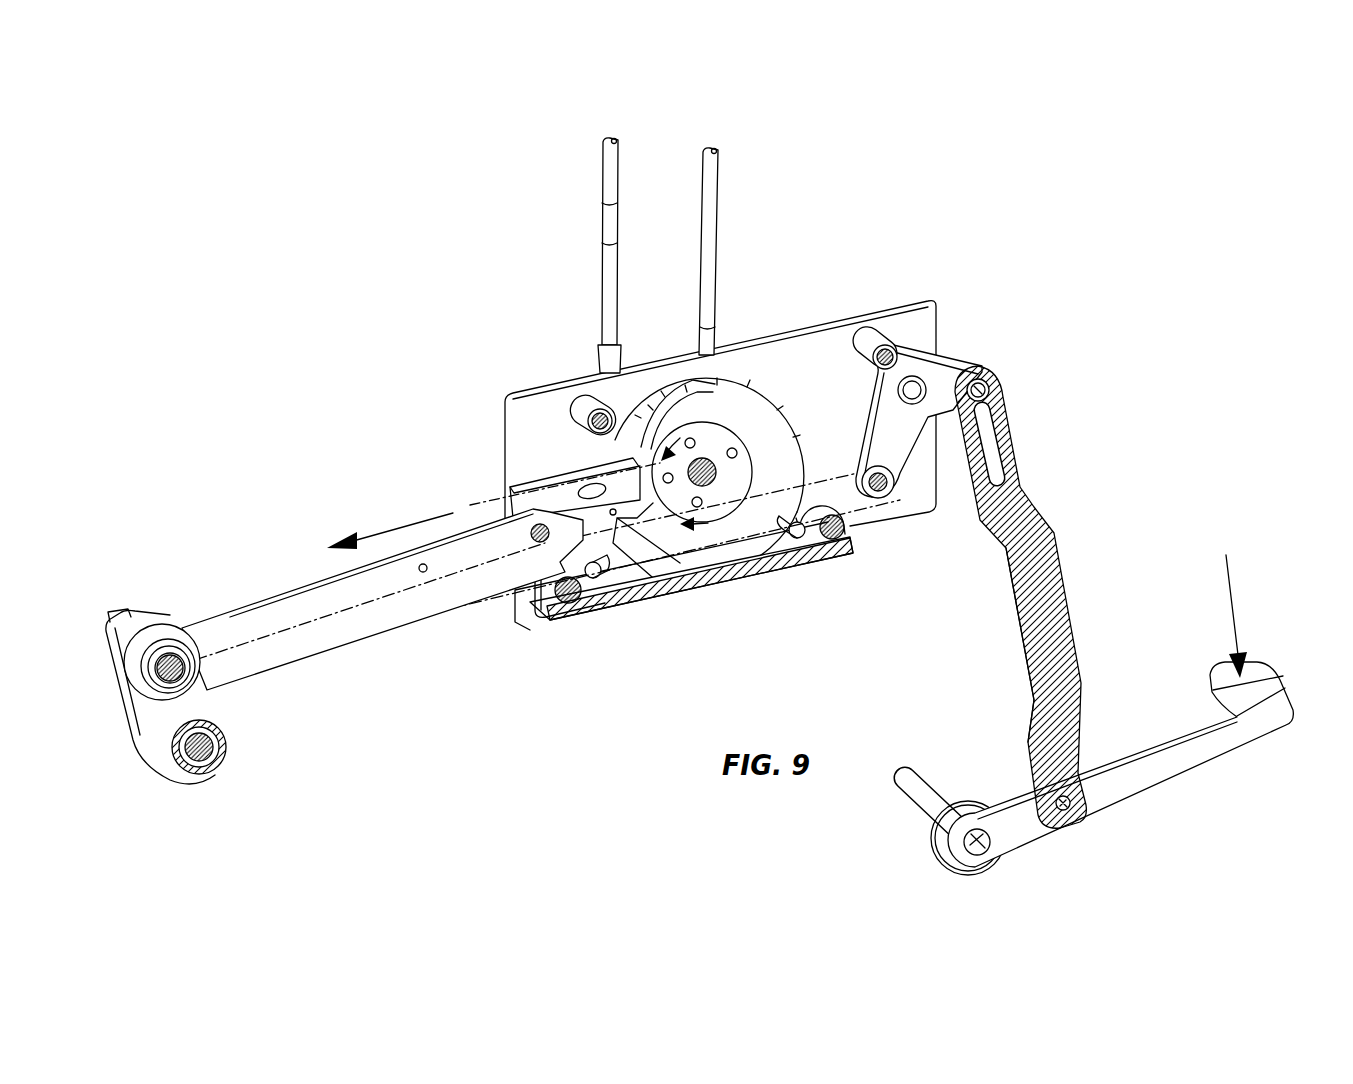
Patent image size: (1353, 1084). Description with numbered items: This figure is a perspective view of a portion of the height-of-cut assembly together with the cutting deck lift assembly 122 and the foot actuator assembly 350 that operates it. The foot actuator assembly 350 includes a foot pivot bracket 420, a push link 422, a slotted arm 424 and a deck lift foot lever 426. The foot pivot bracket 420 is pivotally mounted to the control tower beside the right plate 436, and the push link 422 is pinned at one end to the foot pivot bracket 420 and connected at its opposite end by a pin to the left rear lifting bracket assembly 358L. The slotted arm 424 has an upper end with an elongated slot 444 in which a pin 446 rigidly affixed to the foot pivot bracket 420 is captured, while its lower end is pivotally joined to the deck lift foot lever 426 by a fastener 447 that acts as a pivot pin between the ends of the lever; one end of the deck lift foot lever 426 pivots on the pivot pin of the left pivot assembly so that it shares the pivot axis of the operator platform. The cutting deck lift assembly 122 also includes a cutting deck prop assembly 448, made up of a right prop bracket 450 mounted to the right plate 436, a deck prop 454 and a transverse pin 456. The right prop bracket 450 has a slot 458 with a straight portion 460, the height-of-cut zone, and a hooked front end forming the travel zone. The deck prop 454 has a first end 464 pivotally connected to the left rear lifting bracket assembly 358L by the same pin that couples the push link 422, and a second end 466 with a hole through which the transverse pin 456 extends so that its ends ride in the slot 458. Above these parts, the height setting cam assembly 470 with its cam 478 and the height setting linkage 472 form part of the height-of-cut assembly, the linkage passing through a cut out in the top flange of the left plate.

The cutting deck lift assembly 122 is at (530, 356).
The right prop bracket 450 is at (613, 443).
The height setting cam assembly 470 is at (752, 595).
The cam 478 is at (693, 568).
The slot 458 is at (597, 490).
The straight portion 460 is at (556, 495).
The second end 466 is at (580, 580).
The push link 422 is at (832, 460).
The deck prop 454 is at (318, 580).
The cutting deck prop assembly 448 is at (224, 594).
The transverse pin 456 is at (538, 617).
The left rear lifting bracket assembly 358L is at (112, 592).
The first end 464 is at (197, 683).
The foot pivot bracket 420 is at (883, 423).
The right plate 436 is at (893, 330).
The deck lift foot lever 426 is at (1175, 755).
The foot actuator assembly 350 is at (1082, 503).
The elongated slot 444 is at (996, 432).
The pin 446 is at (989, 388).
The fastener 447 is at (1068, 808).
The slotted arm 424 is at (1053, 608).
The height setting linkage 472 is at (758, 186).